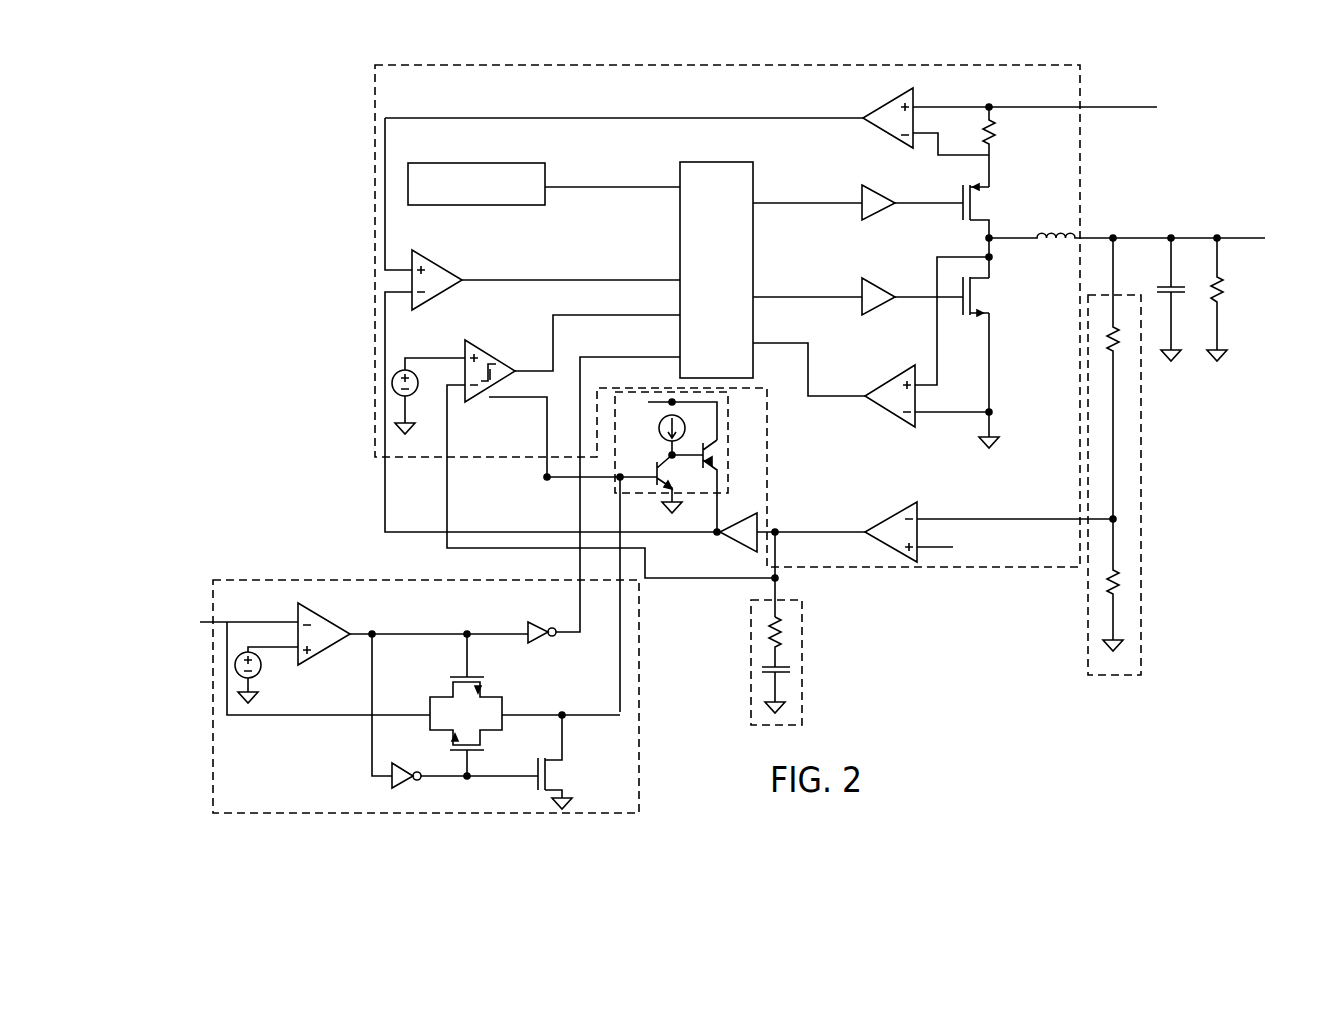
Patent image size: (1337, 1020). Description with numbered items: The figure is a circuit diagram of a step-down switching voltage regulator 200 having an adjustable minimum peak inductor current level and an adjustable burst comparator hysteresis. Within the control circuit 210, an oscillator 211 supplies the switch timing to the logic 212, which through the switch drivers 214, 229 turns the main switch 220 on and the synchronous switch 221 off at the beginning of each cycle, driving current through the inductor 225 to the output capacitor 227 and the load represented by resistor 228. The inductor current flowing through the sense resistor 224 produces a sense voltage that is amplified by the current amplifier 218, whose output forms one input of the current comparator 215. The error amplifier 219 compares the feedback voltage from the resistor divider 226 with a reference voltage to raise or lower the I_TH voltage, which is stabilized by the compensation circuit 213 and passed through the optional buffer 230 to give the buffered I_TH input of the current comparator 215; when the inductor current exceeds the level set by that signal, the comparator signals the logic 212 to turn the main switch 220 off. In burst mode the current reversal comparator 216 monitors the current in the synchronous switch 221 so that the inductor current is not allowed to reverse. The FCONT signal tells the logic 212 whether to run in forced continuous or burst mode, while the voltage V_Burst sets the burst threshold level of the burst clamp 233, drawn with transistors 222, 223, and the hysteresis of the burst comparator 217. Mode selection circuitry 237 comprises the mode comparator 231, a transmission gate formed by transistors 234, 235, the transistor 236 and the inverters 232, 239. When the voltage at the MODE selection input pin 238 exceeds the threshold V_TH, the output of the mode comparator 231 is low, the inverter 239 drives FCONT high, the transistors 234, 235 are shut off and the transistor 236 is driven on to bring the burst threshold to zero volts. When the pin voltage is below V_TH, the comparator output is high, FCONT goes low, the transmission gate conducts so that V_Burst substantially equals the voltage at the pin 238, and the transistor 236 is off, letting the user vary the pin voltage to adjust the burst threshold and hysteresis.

The switching regulator 200 is at (300, 62).
The control circuit 210 is at (949, 64).
The oscillator 211 is at (465, 160).
The logic 212 is at (730, 296).
The compensation network 213 is at (805, 665).
The driver buffer 214 is at (891, 196).
The current comparator 215 is at (449, 259).
The current reversal comparator 216 is at (893, 372).
The burst comparator 217 is at (498, 359).
The current amplifier 218 is at (880, 100).
The error amplifier 219 is at (900, 505).
The main switch 220 is at (991, 206).
The synchronous switch 221 is at (991, 300).
The transistor 222 is at (661, 456).
The transistor 223 is at (713, 458).
The resistor 224 is at (1005, 132).
The inductor 225 is at (1070, 227).
The feedback resistor divider 226 is at (1143, 461).
The output capacitor 227 is at (1168, 283).
The load resistor 228 is at (1230, 297).
The driver buffer 229 is at (891, 290).
The buffer 230 is at (746, 556).
The mode comparator 231 is at (340, 628).
The inverter 232 is at (410, 790).
The burst clamp 233 is at (729, 418).
The NMOS transistor 234 is at (496, 686).
The PMOS transistor 235 is at (493, 744).
The NMOS transistor 236 is at (554, 776).
The mode selection circuitry 237 is at (641, 757).
The MODE selection input pin 238 is at (228, 626).
The inverter 239 is at (538, 621).